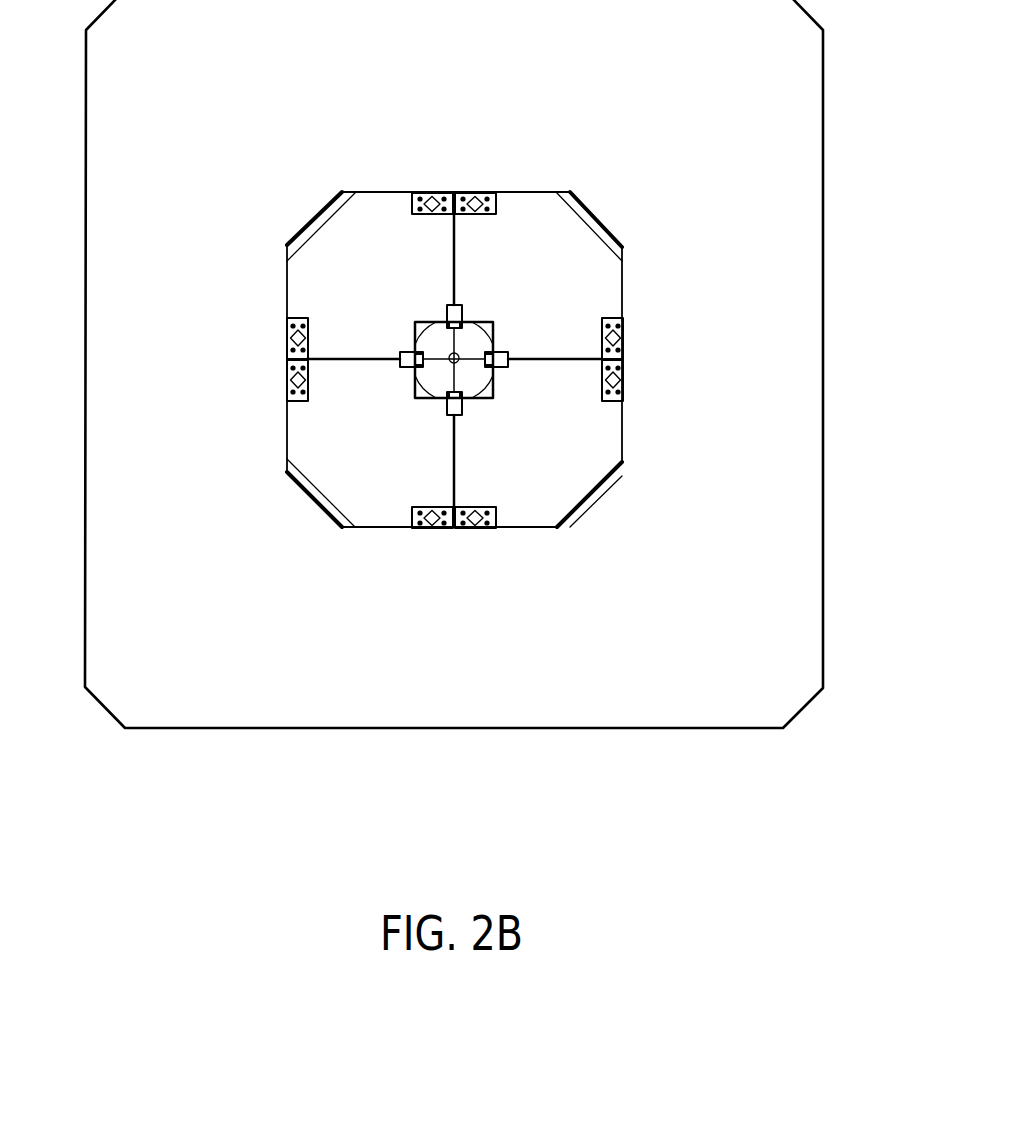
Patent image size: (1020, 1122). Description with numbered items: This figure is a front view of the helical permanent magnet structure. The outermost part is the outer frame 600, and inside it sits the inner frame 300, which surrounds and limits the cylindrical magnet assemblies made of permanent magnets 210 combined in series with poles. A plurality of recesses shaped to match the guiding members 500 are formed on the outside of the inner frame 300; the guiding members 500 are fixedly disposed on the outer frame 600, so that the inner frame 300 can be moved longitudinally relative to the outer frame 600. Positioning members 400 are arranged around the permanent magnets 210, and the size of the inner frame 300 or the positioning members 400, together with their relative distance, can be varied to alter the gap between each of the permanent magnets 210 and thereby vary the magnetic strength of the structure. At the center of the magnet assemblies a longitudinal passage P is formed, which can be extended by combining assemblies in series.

The outer frame 600 is at (800, 180).
The guiding members 500 is at (620, 333).
The positioning members 400 is at (642, 368).
The inner frame 300 is at (592, 359).
The permanent magnets 210 is at (255, 386).
The longitudinal passage P is at (457, 356).